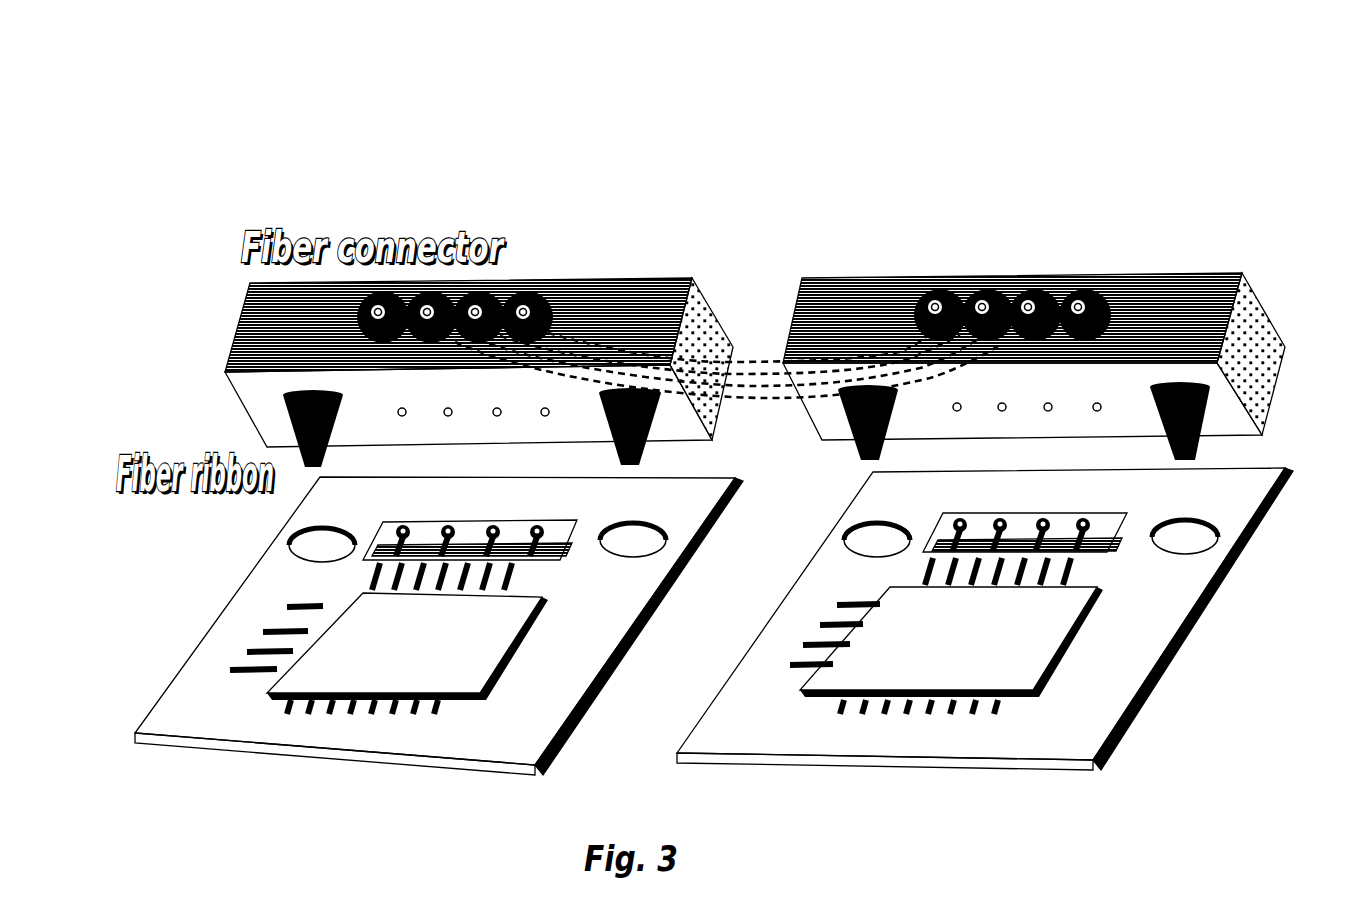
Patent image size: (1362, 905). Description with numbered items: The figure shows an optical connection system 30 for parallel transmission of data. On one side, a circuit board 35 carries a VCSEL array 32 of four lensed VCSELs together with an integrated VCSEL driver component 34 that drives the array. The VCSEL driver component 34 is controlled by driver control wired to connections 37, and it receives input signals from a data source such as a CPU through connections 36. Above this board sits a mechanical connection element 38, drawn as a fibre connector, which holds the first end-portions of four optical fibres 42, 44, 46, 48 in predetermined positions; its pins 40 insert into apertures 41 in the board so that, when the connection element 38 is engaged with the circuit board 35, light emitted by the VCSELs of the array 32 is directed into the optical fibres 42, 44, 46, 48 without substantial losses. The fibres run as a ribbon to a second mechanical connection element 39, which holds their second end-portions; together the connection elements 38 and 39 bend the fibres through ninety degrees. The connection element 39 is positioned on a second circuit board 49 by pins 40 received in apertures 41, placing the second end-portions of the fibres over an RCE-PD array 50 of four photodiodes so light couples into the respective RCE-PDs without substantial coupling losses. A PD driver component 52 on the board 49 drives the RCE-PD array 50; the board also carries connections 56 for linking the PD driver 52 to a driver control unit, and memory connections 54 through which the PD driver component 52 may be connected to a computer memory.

The optical connection system 30 is at (748, 180).
The VCSEL array 32 is at (553, 548).
The VCSEL driver component 34 is at (500, 630).
The circuit board 35 is at (492, 735).
The connections 36 is at (300, 715).
The connections 37 is at (233, 673).
The mechanical connection element 38 is at (627, 287).
The mechanical connection element 39 is at (1200, 285).
The pins 40 is at (283, 408).
The apertures 41 is at (333, 548).
The optical fibre 42 is at (723, 362).
The optical fibre 44 is at (735, 374).
The optical fibre 46 is at (753, 386).
The optical fibre 48 is at (768, 398).
The second circuit board 49 is at (1052, 718).
The RCE-PD array 50 is at (1093, 553).
The PD driver component 52 is at (1012, 660).
The memory connections 54 is at (887, 713).
The connections 56 is at (863, 668).